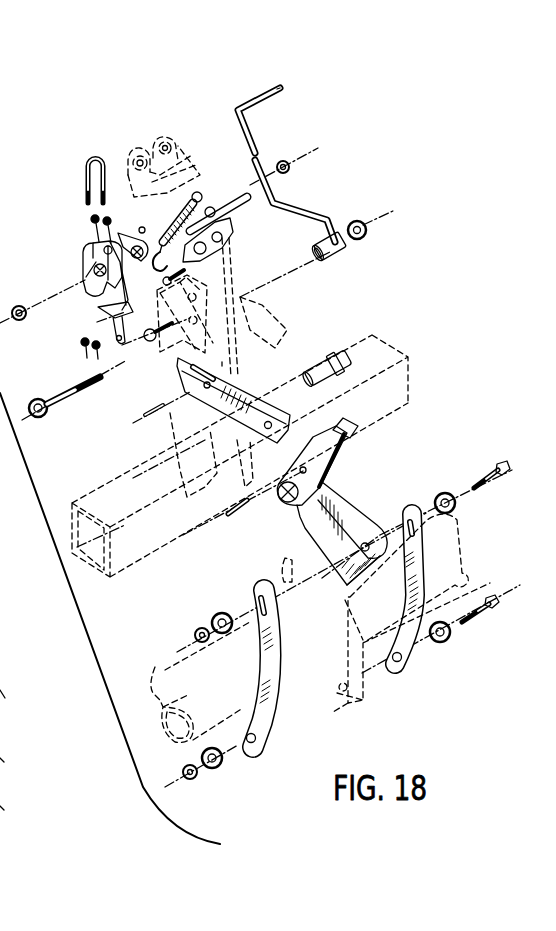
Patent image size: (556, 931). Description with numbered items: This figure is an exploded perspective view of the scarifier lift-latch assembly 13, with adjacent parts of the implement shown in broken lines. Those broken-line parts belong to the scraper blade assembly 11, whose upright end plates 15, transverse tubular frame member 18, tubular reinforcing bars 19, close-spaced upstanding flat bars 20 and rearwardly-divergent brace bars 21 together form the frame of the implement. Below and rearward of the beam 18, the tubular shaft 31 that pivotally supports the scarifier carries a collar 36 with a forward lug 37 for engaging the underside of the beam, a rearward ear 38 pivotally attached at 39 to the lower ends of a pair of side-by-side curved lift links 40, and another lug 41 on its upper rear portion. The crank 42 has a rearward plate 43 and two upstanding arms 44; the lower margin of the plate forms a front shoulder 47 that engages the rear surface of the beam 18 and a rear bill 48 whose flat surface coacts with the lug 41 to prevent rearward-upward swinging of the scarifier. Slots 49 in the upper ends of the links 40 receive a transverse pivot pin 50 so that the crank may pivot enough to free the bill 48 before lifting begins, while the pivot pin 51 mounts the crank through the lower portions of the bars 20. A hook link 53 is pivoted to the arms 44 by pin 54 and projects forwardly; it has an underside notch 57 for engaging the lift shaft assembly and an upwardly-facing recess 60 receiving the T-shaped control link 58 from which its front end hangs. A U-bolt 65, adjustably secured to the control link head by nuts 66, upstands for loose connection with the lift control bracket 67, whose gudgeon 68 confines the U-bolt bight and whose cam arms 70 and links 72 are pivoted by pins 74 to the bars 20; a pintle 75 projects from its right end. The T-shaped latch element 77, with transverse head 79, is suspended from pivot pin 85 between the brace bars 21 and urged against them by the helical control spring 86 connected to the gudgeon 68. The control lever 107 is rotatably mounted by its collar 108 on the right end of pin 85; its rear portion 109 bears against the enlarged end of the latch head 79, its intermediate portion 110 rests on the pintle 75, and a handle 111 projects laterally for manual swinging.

The scraper blade assembly 11 is at (23, 818).
The scarifier lift-latch assembly 13 is at (358, 290).
The upright end plates 15 is at (0, 760).
The transverse tubular frame member 18 is at (410, 383).
The tubular reinforcing bars 19 is at (3, 701).
The upstanding flat bars 20 is at (163, 138).
The brace bars 21 is at (265, 306).
The cylindrical shaft 31 is at (156, 670).
The collar 36 is at (342, 652).
The lug 37 is at (286, 572).
The ear 38 is at (355, 698).
The pivotal attachment 39 is at (489, 619).
The curved lift links 40 is at (262, 669).
The lug 41 is at (338, 625).
The crank 42 is at (378, 468).
The crank plate 43 is at (343, 512).
The crank arms 44 is at (349, 434).
The shoulder 47 is at (300, 520).
The bill 48 is at (357, 582).
The slots 49 is at (411, 512).
The pivot pin 50 is at (485, 474).
The pivot pin 51 is at (330, 364).
The hook link 53 is at (242, 387).
The pivot pin 54 is at (238, 510).
The notch 57 is at (166, 395).
The control link 58 is at (100, 310).
The recess 60 is at (222, 364).
The U-bolt 65 is at (86, 158).
The nuts 66 is at (92, 217).
The lift control bracket 67 is at (88, 246).
The gudgeon 68 is at (104, 245).
The cam arm 70 is at (90, 290).
The control bracket link 72 is at (90, 272).
The pins 74 is at (158, 340).
The pintle 75 is at (142, 229).
The latch element 77 is at (263, 231).
The latch head 79 is at (240, 196).
The pivot pin 85 is at (70, 395).
The control spring 86 is at (201, 198).
The control lever 107 is at (252, 129).
The collar 108 is at (343, 256).
The rear lever portion 109 is at (355, 224).
The intermediate lever portion 110 is at (305, 212).
The handle 111 is at (275, 89).